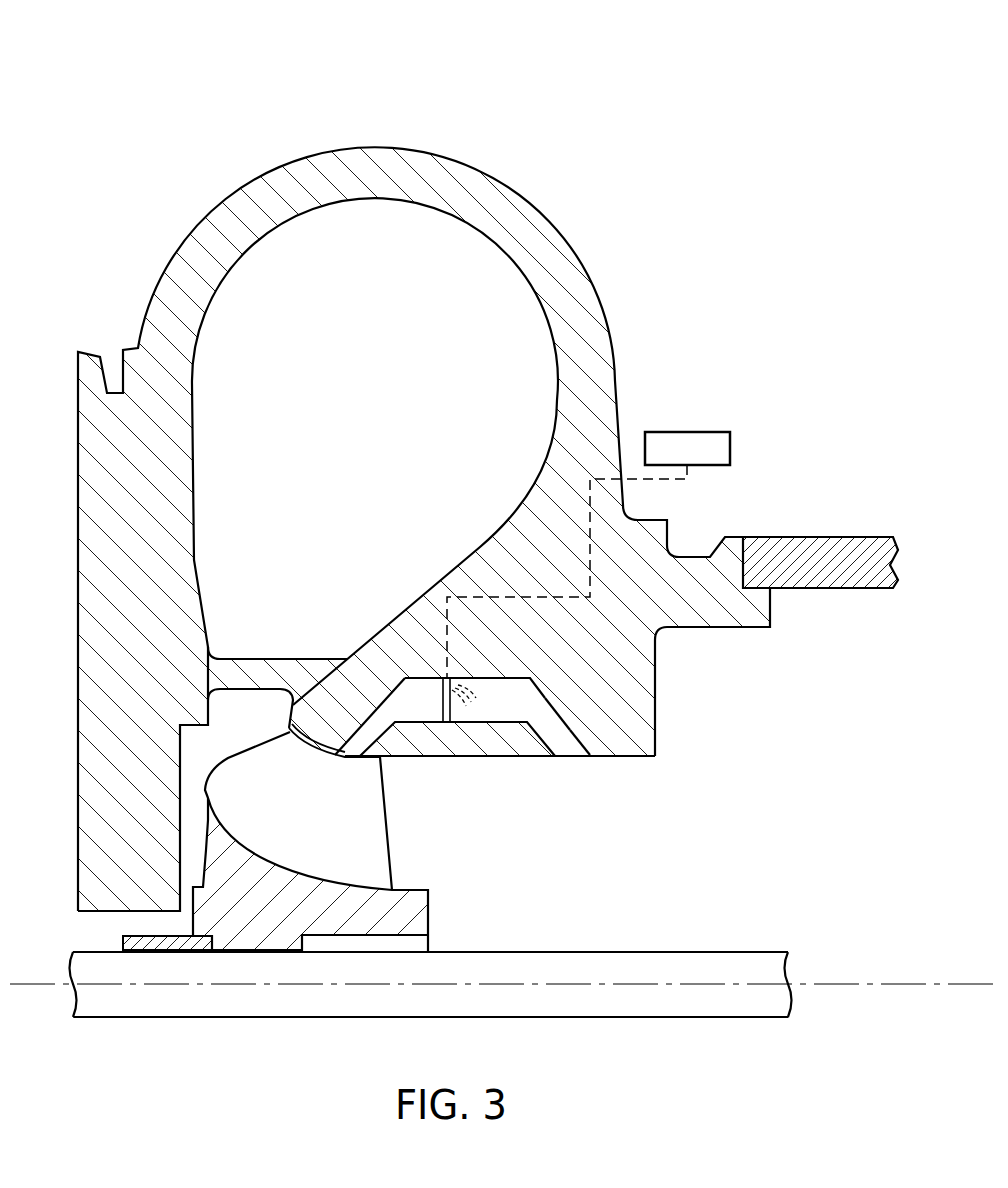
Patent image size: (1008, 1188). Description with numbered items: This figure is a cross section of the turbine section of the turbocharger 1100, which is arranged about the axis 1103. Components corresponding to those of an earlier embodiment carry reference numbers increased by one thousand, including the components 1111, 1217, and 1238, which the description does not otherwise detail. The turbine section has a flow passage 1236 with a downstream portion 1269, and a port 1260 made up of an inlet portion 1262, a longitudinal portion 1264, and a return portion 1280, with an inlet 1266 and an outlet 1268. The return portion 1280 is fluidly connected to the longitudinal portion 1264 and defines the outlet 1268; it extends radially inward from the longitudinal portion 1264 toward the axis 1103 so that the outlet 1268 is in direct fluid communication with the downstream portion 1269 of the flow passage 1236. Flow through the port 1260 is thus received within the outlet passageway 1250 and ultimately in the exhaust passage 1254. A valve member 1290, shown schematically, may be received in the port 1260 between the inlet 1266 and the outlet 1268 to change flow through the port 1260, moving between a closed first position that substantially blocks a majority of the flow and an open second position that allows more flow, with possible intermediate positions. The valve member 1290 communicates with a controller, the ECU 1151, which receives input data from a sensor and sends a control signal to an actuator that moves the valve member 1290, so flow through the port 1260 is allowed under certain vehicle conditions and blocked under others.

The turbocharger 1100 is at (128, 163).
The axis 1103 is at (44, 985).
The shaft 1111 is at (257, 951).
The ECU 1151 is at (690, 432).
The turbine wheel 1217 is at (372, 858).
The flow passage 1236 is at (243, 702).
The volute 1238 is at (393, 435).
The outlet passageway 1250 is at (545, 895).
The exhaust passage 1254 is at (808, 817).
The port 1260 is at (500, 691).
The inlet portion 1262 is at (365, 742).
The longitudinal portion 1264 is at (525, 708).
The inlet 1266 is at (342, 760).
The outlet 1268 is at (572, 757).
The downstream portion 1269 is at (462, 757).
The return portion 1280 is at (557, 737).
The valve member 1290 is at (443, 707).